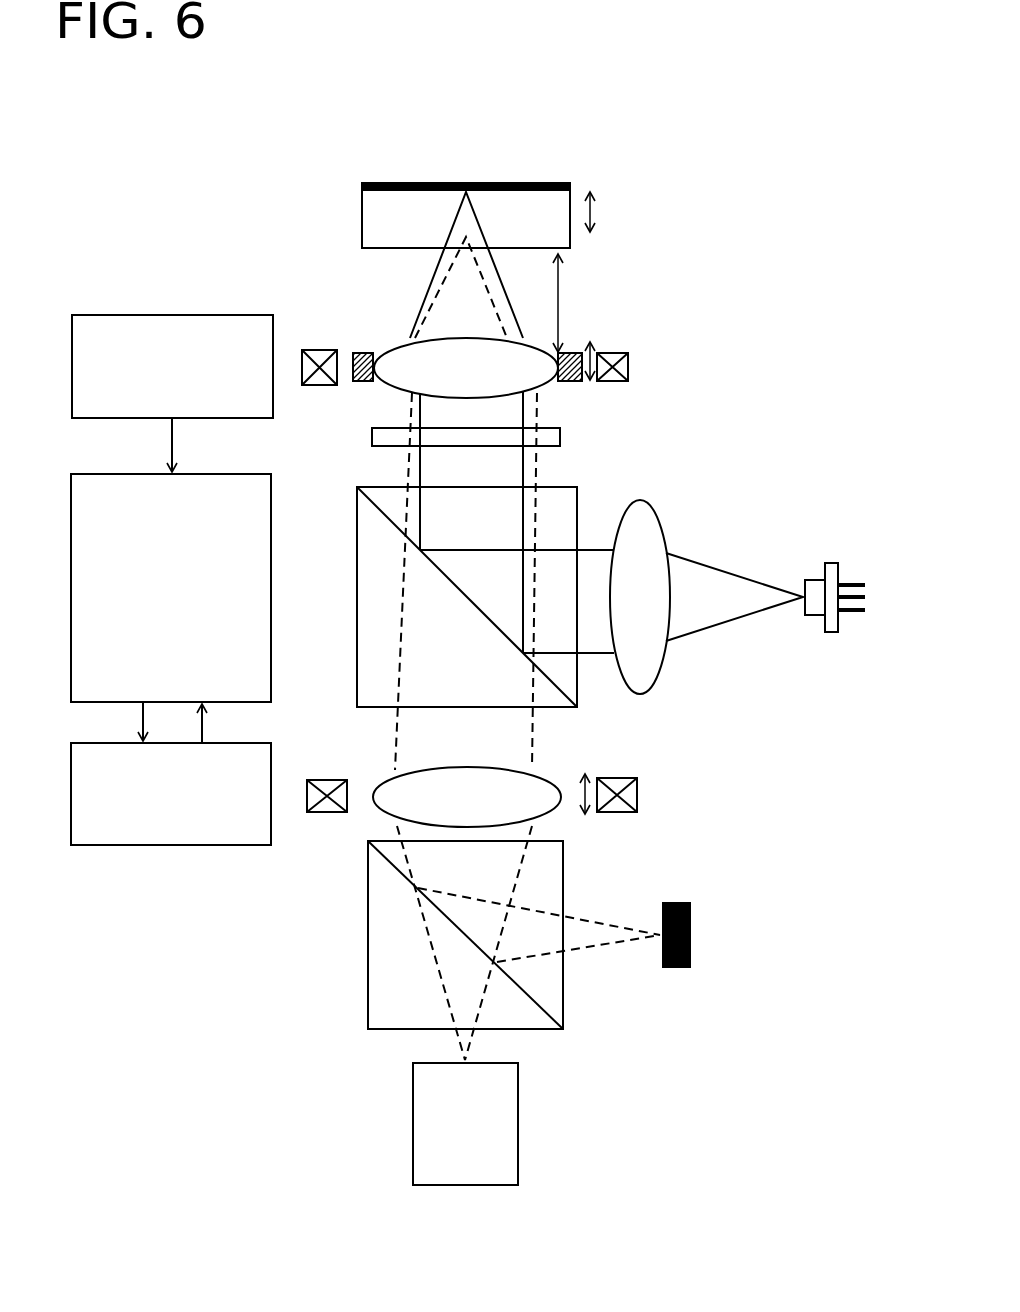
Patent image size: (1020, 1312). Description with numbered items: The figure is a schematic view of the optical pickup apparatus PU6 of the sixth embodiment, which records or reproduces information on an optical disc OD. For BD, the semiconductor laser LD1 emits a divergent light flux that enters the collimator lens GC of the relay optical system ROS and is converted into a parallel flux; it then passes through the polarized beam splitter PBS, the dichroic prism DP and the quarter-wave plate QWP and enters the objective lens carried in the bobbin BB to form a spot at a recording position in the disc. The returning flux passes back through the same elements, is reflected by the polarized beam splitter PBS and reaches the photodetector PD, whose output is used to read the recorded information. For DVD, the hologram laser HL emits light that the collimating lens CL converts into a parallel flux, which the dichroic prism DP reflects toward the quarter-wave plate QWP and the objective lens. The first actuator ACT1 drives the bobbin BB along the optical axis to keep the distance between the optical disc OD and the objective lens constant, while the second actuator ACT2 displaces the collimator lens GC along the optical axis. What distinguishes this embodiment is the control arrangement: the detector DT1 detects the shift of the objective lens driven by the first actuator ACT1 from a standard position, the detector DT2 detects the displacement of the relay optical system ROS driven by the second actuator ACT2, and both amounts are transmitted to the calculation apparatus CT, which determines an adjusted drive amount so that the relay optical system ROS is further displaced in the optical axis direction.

The optical pickup apparatus PU6 is at (857, 225).
The optical disc OD is at (557, 183).
The bobbin BB is at (360, 353).
The first actuator ACT1 is at (315, 350).
The quarter-wave plate QWP is at (560, 437).
The dichroic prism DP is at (577, 487).
The collimating lens CL is at (655, 505).
The hologram laser HL is at (830, 563).
The detector DT1 is at (92, 315).
The calculation apparatus CT is at (71, 612).
The detector DT2 is at (153, 845).
The second actuator ACT2 is at (325, 780).
The collimator lens GC is at (550, 780).
The relay optical system ROS is at (366, 814).
The polarized beam splitter PBS is at (563, 1005).
The photodetector PD is at (690, 922).
The semiconductor laser LD1 is at (518, 1113).